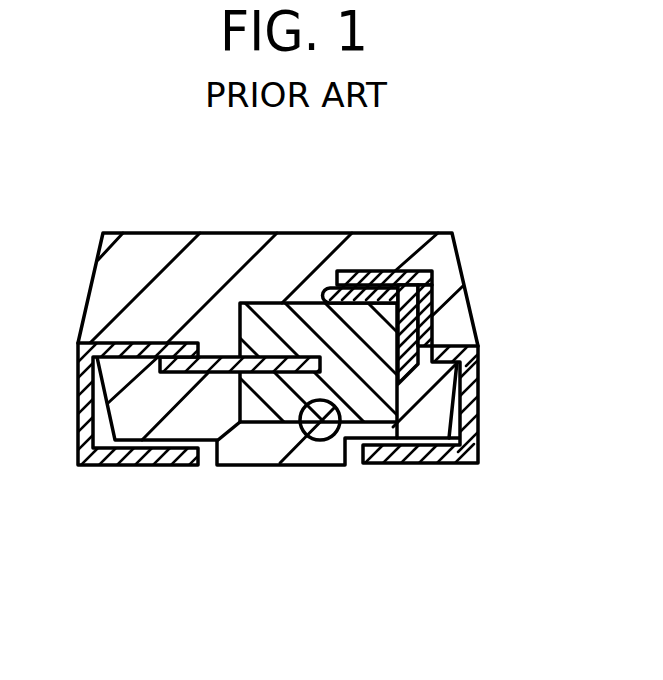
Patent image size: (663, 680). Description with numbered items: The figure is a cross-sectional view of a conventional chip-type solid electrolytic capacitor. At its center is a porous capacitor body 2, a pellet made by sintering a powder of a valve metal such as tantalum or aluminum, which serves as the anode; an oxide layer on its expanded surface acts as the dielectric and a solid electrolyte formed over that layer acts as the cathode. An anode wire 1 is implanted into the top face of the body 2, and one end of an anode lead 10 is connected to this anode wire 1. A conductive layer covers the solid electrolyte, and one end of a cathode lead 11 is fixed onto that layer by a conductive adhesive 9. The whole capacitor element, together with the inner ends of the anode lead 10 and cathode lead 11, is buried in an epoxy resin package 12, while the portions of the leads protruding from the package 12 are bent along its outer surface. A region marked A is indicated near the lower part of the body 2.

The anode wire 1 is at (218, 366).
The porous capacitor body 2 is at (260, 316).
The conductive adhesive 9 is at (428, 270).
The anode lead 10 is at (82, 462).
The cathode lead 11 is at (399, 462).
The epoxy resin package 12 is at (465, 310).
The gap portion A is at (320, 440).